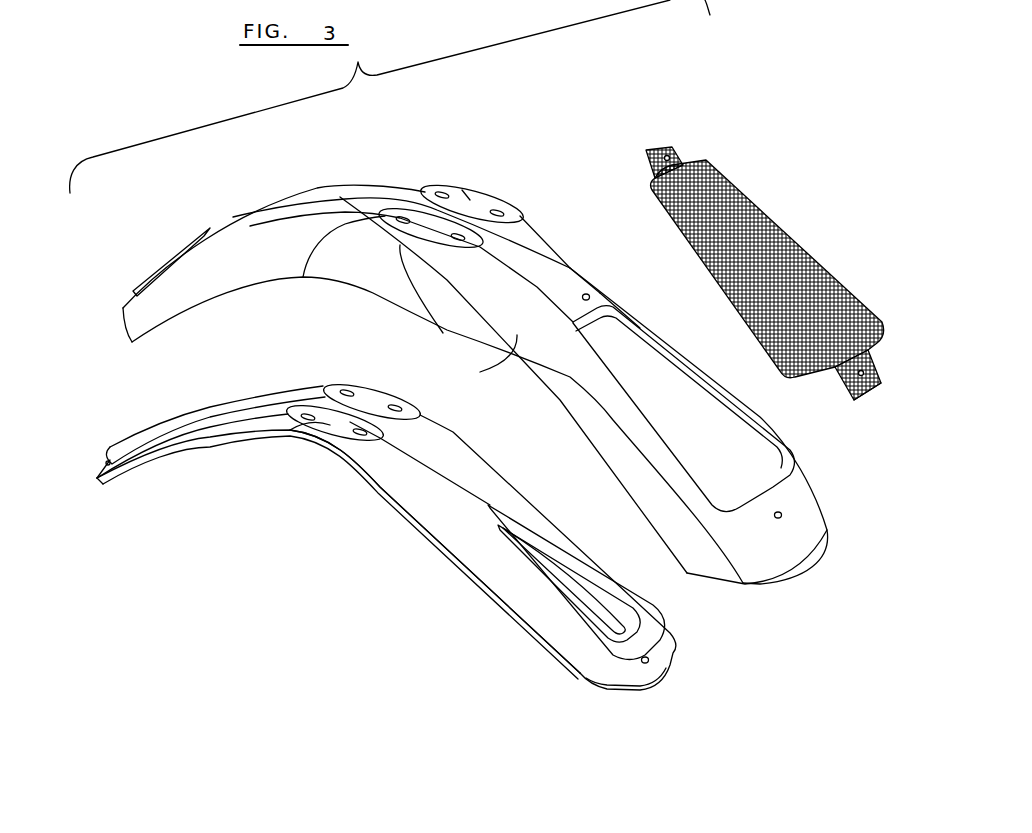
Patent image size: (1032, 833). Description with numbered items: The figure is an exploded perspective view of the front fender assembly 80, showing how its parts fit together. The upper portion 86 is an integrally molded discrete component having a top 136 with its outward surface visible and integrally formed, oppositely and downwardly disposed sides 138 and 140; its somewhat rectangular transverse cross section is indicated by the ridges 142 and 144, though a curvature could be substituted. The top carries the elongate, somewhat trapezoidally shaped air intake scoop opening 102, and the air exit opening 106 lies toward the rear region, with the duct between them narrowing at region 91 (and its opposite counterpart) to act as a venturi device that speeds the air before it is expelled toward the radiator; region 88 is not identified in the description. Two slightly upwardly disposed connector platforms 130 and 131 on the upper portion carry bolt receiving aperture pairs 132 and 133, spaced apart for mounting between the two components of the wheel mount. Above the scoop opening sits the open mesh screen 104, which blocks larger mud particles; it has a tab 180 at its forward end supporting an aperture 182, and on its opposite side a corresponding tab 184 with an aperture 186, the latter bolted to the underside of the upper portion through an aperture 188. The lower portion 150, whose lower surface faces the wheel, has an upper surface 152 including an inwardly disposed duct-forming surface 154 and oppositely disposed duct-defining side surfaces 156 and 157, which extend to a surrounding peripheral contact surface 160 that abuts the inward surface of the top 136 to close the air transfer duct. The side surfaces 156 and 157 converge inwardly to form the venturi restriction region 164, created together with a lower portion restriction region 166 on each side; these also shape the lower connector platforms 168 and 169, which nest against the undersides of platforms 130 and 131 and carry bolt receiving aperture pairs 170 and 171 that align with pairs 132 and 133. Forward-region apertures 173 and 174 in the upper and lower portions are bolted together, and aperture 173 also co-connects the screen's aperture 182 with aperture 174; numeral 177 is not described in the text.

The front fender assembly 80 is at (582, 146).
The upper portion 86 is at (489, 349).
The side wall region 88 is at (605, 298).
The region 91 is at (330, 262).
The air intake scoop opening 102 is at (742, 470).
The open mesh screen 104 is at (787, 264).
The air exit opening 106 is at (142, 252).
The connector platform 130 is at (455, 245).
The connector platform 131 is at (478, 205).
The bolt receiving aperture pair 132 is at (402, 224).
The bolt receiving aperture pair 133 is at (440, 192).
The top 136 is at (583, 272).
The side 138 is at (558, 405).
The side 140 is at (750, 440).
The ridge 142 is at (488, 372).
The ridge 144 is at (647, 318).
The lower portion 150 is at (420, 527).
The upper surface 152 is at (472, 507).
The duct-forming surface 154 is at (636, 618).
The duct-defining side surface 156 is at (567, 622).
The duct-defining side surface 157 is at (583, 540).
The peripheral contact surface 160 is at (602, 677).
The venturi restriction region 164 is at (357, 405).
The lower portion restriction region 166 is at (340, 438).
The lower portion connector platform 168 is at (332, 428).
The lower portion connector platform 169 is at (462, 190).
The bolt receiving aperture pair 170 is at (308, 419).
The bolt receiving aperture pair 171 is at (345, 393).
The aperture 173 is at (782, 514).
The aperture 174 is at (665, 662).
The blade tip 177 is at (107, 462).
The tab 180 is at (862, 390).
The aperture 182 is at (866, 370).
The tab 184 is at (680, 160).
The aperture 186 is at (672, 150).
The aperture 188 is at (590, 295).